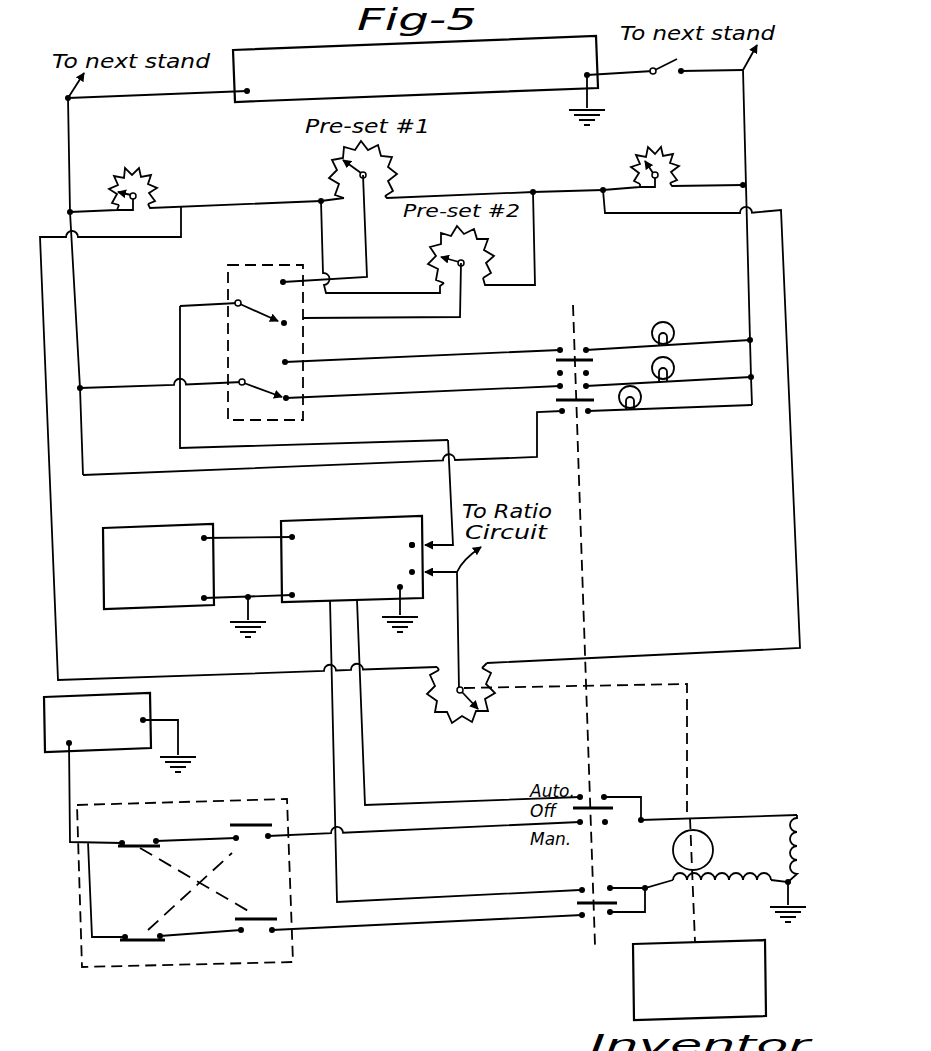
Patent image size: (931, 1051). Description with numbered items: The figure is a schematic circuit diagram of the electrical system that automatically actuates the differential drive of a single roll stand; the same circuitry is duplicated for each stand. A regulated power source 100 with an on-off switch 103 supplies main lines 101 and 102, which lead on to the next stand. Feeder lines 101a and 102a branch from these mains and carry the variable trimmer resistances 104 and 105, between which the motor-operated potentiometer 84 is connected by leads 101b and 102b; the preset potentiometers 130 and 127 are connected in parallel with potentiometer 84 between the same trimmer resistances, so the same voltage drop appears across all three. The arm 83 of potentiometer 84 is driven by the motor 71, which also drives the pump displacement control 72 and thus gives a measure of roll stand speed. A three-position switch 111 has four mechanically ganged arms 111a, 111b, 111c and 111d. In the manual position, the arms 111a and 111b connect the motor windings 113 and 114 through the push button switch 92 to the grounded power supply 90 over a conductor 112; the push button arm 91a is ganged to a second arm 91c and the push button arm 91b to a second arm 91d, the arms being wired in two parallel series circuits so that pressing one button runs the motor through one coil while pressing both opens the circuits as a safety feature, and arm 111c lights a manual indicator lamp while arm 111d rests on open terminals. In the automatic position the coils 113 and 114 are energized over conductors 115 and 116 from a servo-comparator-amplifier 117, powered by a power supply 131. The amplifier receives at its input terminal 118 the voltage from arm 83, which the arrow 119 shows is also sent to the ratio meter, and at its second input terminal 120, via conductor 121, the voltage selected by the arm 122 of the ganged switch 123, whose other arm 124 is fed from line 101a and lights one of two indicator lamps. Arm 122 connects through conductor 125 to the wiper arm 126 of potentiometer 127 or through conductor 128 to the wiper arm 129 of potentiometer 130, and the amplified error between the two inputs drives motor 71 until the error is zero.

The regulated power source 100 is at (583, 40).
The output line 101 is at (70, 83).
The feeder line 101a is at (66, 148).
The lead 101b is at (55, 521).
The output line 102 is at (744, 60).
The feeder line 102a is at (746, 140).
The lead 102b is at (790, 462).
The on-off switch 103 is at (659, 68).
The variable trimmer resistance 104 is at (152, 172).
The variable trimmer resistance 105 is at (672, 152).
The three-position switch 111 is at (592, 924).
The switch arm 111a is at (600, 891).
The switch arm 111b is at (600, 795).
The switch arm 111c is at (554, 400).
The switch arm 111d is at (554, 358).
The conductor 112 is at (70, 795).
The winding 113 is at (736, 889).
The winding 114 is at (805, 834).
The conductor 115 is at (410, 897).
The conductor 116 is at (410, 805).
The servo-comparator-amplifier 117 is at (356, 520).
The input terminal 118 is at (417, 578).
The arrow 119 is at (468, 563).
The second input terminal 120 is at (412, 538).
The conductor 121 is at (456, 486).
The switch arm 122 is at (260, 302).
The switch 123 is at (304, 345).
The switch arm 124 is at (259, 392).
The conductor 125 is at (404, 320).
The wiper arm 126 is at (442, 271).
The preset potentiometer 127 is at (492, 262).
The conductor 128 is at (369, 246).
The wiper arm 129 is at (338, 173).
The preset potentiometer 130 is at (396, 164).
The power supply 131 is at (180, 530).
The motor 71 is at (673, 848).
The pump displacement control 72 is at (640, 989).
The arm 83 is at (464, 716).
The potentiometer 84 is at (432, 716).
The power supply 90 is at (150, 706).
The push button switch arm 91a is at (254, 840).
The push button switch arm 91b is at (260, 917).
The switch arm 91c is at (137, 935).
The switch arm 91d is at (128, 850).
The switch 92 is at (106, 965).